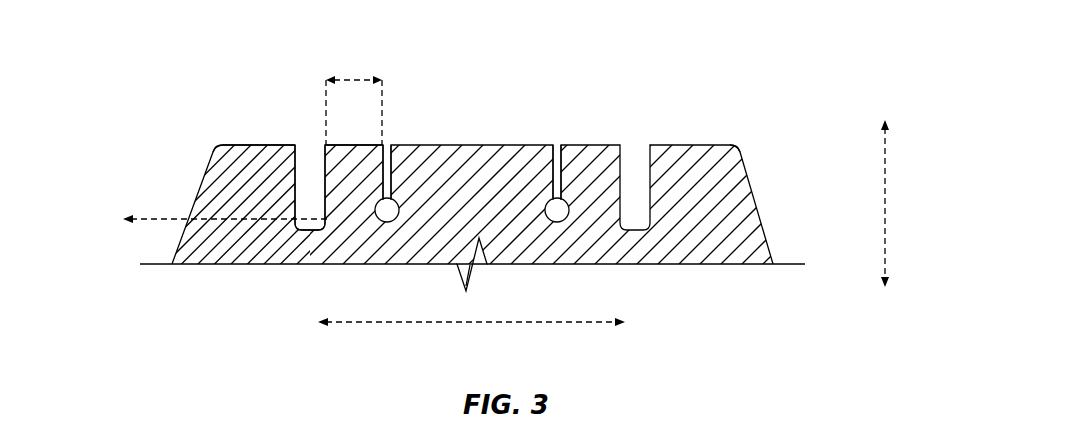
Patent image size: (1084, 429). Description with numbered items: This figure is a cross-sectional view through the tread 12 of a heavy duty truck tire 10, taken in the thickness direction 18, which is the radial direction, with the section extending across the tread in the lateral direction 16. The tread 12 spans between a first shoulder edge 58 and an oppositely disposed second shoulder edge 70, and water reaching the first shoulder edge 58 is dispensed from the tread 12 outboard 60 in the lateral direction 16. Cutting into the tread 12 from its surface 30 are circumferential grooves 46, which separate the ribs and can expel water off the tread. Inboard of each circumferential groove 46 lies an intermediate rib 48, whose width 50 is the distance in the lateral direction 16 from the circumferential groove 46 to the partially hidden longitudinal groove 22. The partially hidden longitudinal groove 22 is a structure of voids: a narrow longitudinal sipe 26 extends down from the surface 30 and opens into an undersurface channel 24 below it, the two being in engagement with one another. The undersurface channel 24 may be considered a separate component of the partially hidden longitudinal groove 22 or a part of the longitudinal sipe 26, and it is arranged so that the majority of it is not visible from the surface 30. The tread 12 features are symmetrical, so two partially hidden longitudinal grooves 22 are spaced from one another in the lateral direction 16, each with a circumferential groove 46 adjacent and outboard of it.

The tire 10 is at (824, 56).
The tread 12 is at (756, 182).
The lateral direction 16 is at (500, 322).
The thickness direction 18 is at (886, 205).
The partially hidden longitudinal groove 22 is at (392, 173).
The undersurface channel 24 is at (390, 222).
The longitudinal sipe 26 is at (393, 183).
The surface 30 is at (263, 140).
The circumferential groove 46 is at (308, 150).
The intermediate rib 48 is at (362, 150).
The width 50 is at (360, 80).
The first shoulder edge 58 is at (218, 144).
The outboard 60 is at (152, 219).
The second shoulder edge 70 is at (734, 146).